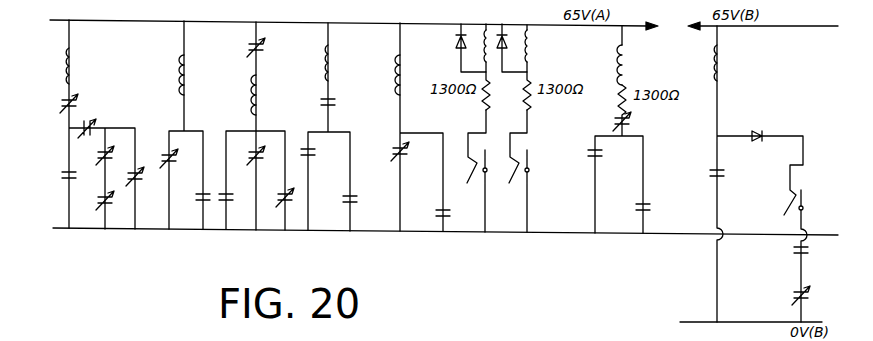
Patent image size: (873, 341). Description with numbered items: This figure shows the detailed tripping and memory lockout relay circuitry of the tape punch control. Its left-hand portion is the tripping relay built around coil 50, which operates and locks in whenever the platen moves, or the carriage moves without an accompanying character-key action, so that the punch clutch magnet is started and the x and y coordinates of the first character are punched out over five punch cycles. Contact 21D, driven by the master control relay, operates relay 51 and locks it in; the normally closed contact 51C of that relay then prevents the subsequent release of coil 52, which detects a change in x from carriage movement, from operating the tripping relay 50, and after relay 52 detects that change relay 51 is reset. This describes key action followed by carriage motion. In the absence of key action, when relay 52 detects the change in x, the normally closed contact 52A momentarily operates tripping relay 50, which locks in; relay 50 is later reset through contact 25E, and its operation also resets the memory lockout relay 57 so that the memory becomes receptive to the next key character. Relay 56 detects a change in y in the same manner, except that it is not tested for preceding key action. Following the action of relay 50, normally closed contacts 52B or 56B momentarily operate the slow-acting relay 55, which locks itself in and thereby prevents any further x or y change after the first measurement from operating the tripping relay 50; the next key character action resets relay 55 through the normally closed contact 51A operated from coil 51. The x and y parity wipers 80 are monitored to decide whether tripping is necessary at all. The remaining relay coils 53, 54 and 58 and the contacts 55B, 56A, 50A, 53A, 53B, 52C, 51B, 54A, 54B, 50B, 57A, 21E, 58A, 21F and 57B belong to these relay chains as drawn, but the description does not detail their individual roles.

The tripping relay coil 50 is at (72, 64).
The contact 25E is at (64, 102).
The variable capacitor 55B is at (92, 124).
The normally closed contact 51C is at (109, 152).
The variable capacitor 56A is at (136, 172).
The capacitor 50A is at (64, 176).
The normally closed contact 52A is at (102, 201).
The relay coil 52 is at (186, 66).
The variable capacitor 53A is at (172, 154).
The capacitor 53B is at (199, 196).
The normally closed contact 51A is at (262, 43).
The relay 55 is at (258, 99).
The normally closed contact 52B is at (258, 151).
The normally closed contact 56B is at (287, 194).
The relay 51 is at (331, 62).
The capacitor 52C is at (331, 100).
The capacitor 51B is at (308, 152).
The contact 21D is at (352, 196).
The relay 56 is at (402, 66).
The variable capacitor 54A is at (412, 155).
The capacitor 54B is at (440, 212).
The inductor coil with diode 53 is at (484, 52).
The inductor coil with diode 54 is at (528, 55).
The parity wipers 80 is at (512, 184).
The memory lockout relay coil 57 is at (624, 62).
The variable capacitor 50B is at (626, 122).
The capacitor 57A is at (597, 154).
The capacitor 21E is at (645, 205).
The inductor coil 58 is at (719, 62).
The capacitor 58A is at (719, 172).
The capacitor 21F is at (798, 251).
The variable capacitor 57B is at (804, 292).